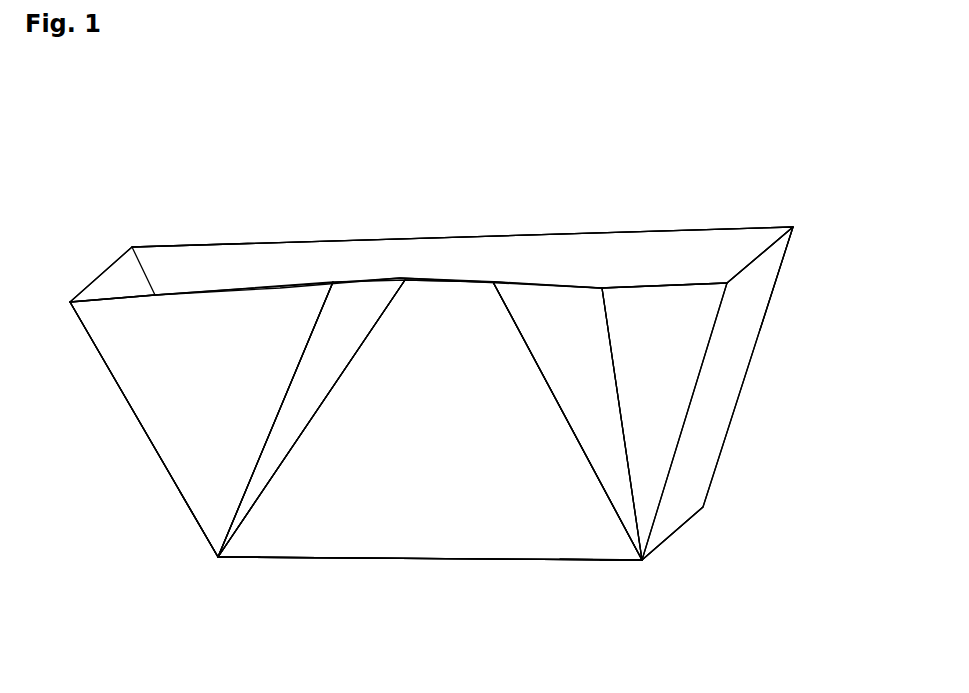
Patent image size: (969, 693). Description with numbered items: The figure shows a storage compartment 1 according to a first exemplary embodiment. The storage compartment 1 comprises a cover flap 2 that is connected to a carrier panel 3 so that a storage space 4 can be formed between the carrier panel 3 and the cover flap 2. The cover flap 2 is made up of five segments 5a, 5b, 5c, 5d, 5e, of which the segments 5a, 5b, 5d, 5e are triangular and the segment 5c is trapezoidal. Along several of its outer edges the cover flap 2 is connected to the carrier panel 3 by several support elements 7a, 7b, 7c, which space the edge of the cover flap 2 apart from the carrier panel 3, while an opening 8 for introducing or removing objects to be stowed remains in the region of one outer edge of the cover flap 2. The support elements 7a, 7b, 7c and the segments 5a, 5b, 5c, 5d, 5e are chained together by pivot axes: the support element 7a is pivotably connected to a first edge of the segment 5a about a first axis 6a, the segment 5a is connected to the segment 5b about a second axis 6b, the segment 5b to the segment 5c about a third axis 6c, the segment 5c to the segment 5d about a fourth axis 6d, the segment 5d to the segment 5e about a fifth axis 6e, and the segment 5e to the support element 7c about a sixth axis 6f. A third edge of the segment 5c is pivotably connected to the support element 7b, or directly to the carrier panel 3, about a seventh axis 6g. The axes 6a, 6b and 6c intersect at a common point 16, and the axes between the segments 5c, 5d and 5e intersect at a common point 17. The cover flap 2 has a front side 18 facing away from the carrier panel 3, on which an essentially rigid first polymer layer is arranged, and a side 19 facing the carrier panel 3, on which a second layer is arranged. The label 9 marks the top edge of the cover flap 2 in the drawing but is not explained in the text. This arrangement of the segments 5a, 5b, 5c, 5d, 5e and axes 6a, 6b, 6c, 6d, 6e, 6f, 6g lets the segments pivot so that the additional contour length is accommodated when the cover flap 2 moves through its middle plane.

The storage compartment 1 is at (237, 182).
The cover flap 2 is at (210, 495).
The carrier panel 3 is at (632, 234).
The storage space 4 is at (694, 256).
The segment 5a is at (216, 395).
The segment 5b is at (360, 340).
The segment 5c is at (443, 457).
The segment 5d is at (578, 341).
The segment 5e is at (683, 346).
The first axis 6a is at (140, 430).
The second axis 6b is at (318, 318).
The third axis 6c is at (388, 300).
The fourth axis 6d is at (500, 317).
The fifth axis 6e is at (623, 423).
The sixth axis 6f is at (697, 374).
The seventh axis 6g is at (425, 562).
The support element 7a is at (105, 272).
The support element 7b is at (593, 578).
The support element 7c is at (755, 300).
The opening 8 is at (787, 211).
The top edge 9 is at (168, 247).
The common point 16 is at (218, 557).
The common point 17 is at (642, 560).
The front side 18 is at (495, 518).
The side 19 is at (548, 275).